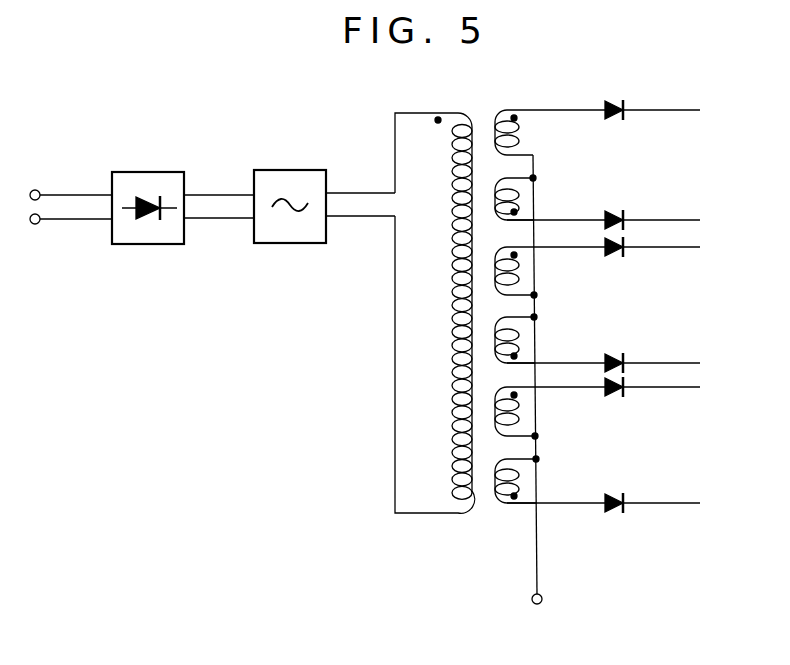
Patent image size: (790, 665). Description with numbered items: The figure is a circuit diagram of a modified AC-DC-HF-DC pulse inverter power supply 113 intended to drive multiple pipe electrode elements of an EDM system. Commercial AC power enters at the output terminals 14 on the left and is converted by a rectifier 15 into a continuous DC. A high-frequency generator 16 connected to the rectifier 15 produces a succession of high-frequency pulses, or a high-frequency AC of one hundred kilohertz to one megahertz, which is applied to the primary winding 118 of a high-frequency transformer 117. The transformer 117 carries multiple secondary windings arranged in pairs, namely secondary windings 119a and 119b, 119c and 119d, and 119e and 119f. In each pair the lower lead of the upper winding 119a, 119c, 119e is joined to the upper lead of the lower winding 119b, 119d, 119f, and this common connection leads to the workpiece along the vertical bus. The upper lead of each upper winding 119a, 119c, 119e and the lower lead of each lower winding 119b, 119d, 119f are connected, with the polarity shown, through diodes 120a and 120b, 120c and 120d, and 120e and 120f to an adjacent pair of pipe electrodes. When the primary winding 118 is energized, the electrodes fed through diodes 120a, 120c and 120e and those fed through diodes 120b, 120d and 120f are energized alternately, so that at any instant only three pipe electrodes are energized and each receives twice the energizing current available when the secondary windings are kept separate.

The inverter power supply 113 is at (229, 109).
The output terminals 14 is at (28, 208).
The rectifier 15 is at (145, 244).
The high-frequency generator 16 is at (282, 243).
The high-frequency transformer 117 is at (486, 126).
The primary winding 118 is at (456, 118).
The secondary winding 119a is at (524, 131).
The secondary winding 119b is at (522, 205).
The secondary winding 119c is at (522, 276).
The secondary winding 119d is at (522, 345).
The secondary winding 119e is at (522, 417).
The secondary winding 119f is at (522, 488).
The diode 120a is at (618, 114).
The diode 120b is at (620, 216).
The diode 120c is at (618, 252).
The diode 120d is at (620, 360).
The diode 120e is at (620, 392).
The diode 120f is at (618, 497).